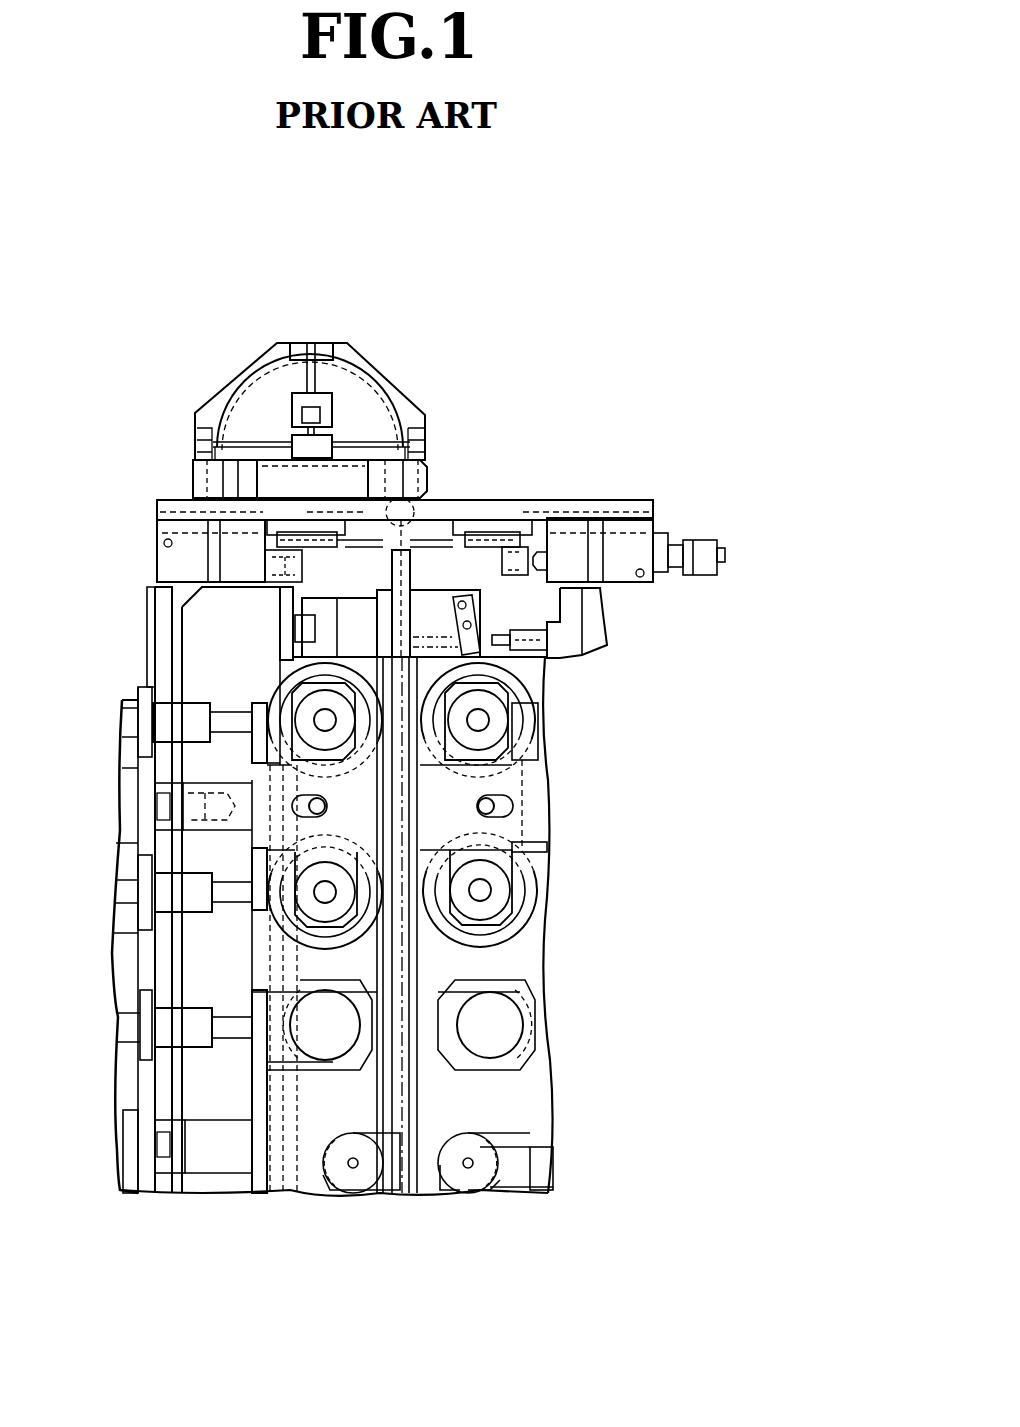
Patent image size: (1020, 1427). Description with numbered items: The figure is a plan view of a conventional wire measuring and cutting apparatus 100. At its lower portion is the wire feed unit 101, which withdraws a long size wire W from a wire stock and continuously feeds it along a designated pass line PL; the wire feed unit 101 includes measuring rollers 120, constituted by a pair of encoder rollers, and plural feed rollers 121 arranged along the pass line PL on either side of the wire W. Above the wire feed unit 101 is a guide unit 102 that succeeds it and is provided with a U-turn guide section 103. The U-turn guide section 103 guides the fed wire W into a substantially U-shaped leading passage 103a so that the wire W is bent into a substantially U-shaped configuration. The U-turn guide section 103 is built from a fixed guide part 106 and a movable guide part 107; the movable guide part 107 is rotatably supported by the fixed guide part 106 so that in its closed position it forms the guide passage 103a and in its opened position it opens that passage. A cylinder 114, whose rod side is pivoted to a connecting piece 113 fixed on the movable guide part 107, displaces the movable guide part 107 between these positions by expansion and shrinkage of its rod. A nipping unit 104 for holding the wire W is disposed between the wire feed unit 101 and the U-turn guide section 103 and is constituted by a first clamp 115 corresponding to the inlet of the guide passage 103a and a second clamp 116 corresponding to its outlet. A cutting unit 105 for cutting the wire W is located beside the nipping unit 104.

The wire measuring and cutting apparatus 100 is at (540, 332).
The wire feed unit 101 is at (665, 900).
The guide unit 102 is at (404, 381).
The U-turn guide section 103 is at (364, 364).
The U-shaped leading passage 103a is at (428, 408).
The nipping unit 104 is at (560, 475).
The cutting unit 105 is at (690, 520).
The fixed guide part 106 is at (247, 417).
The movable guide part 107 is at (207, 403).
The connecting piece 113 is at (312, 342).
The cylinder 114 is at (290, 395).
The first clamp 115 is at (432, 467).
The second clamp 116 is at (206, 473).
The measuring rollers 120 is at (355, 1065).
The feed rollers 121 is at (378, 740).
The wire W is at (400, 948).
The pass line PL is at (402, 1193).